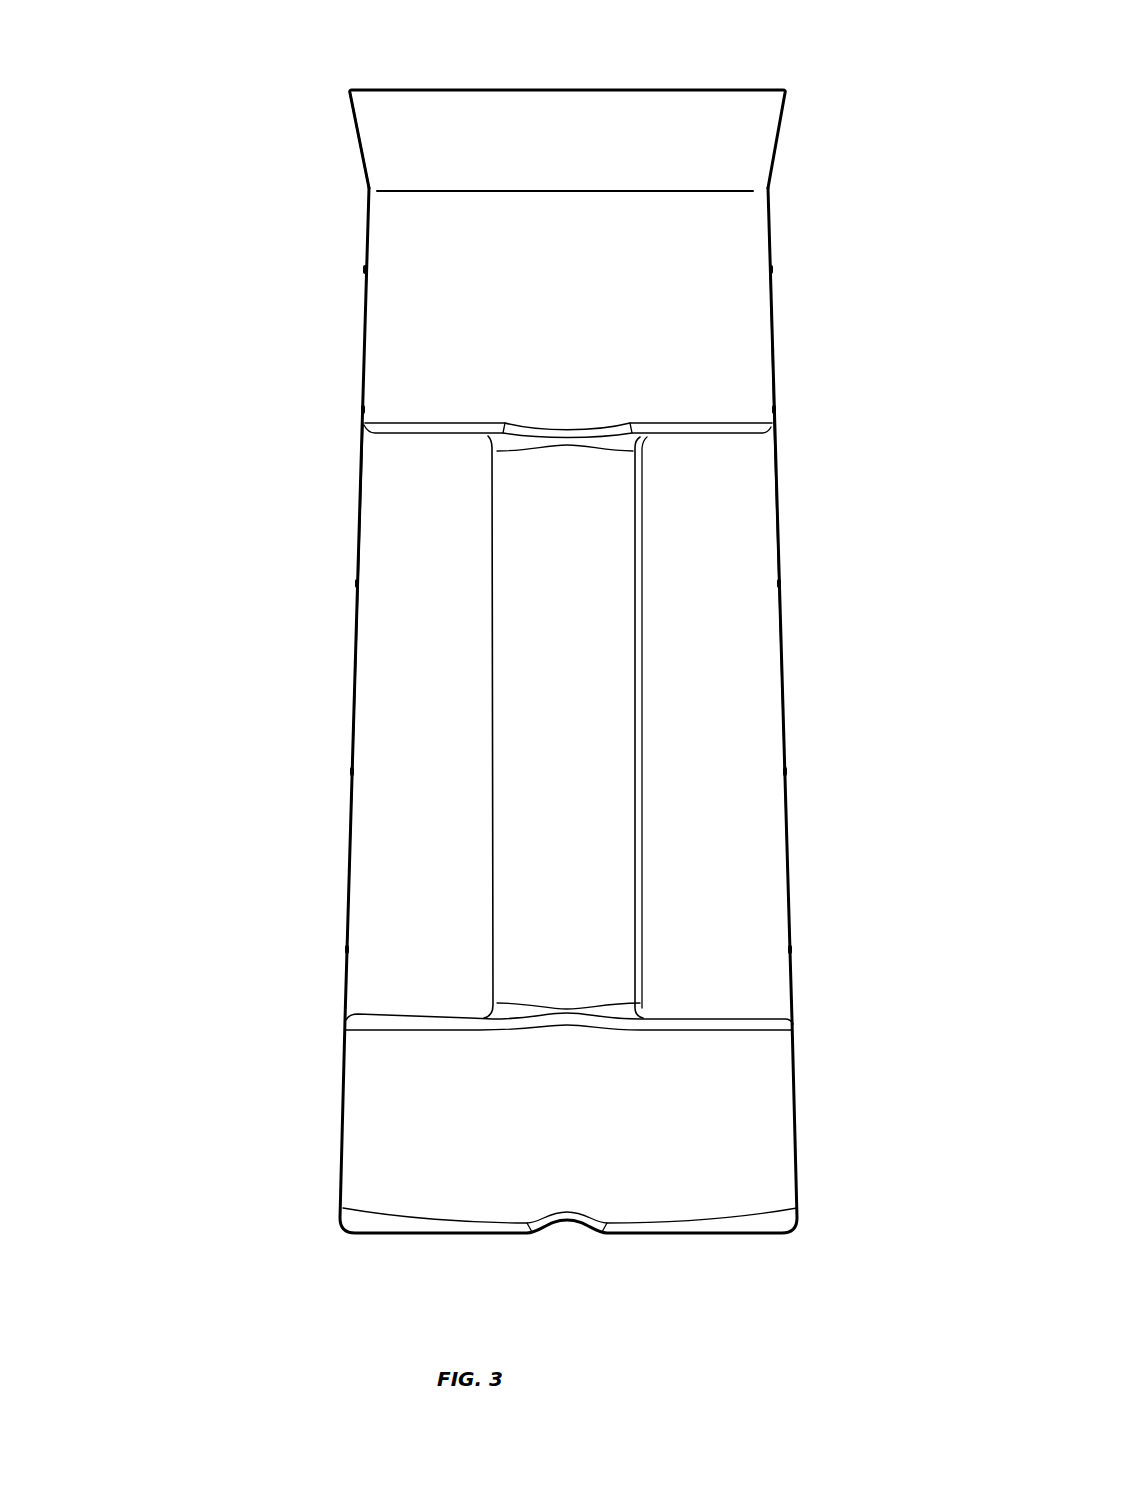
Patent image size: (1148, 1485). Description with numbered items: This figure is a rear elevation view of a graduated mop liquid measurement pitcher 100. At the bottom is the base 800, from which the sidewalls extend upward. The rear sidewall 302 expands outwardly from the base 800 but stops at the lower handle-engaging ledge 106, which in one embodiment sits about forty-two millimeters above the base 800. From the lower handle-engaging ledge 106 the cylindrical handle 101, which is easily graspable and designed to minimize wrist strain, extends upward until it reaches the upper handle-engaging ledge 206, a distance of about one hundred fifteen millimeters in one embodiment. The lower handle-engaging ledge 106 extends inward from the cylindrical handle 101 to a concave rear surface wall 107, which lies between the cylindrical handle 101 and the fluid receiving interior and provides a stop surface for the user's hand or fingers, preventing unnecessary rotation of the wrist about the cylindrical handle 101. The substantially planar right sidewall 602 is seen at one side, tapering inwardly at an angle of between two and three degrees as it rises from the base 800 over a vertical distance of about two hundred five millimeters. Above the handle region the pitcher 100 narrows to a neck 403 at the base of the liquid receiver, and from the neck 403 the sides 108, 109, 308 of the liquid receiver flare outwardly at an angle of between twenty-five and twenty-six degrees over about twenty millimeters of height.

The graduated mop liquid measurement pitcher 100 is at (190, 258).
The cylindrical handle 101 is at (538, 623).
The lower handle-engaging ledge 106 is at (690, 1018).
The concave rear surface wall 107 is at (715, 700).
The side of the liquid receiver 108 is at (780, 145).
The side of the liquid receiver 109 is at (508, 130).
The upper handle-engaging ledge 206 is at (717, 435).
The rear sidewall 302 is at (770, 355).
The side of the liquid receiver 308 is at (353, 130).
The neck 403 is at (358, 190).
The right sidewall 602 is at (357, 611).
The base 800 is at (682, 1235).